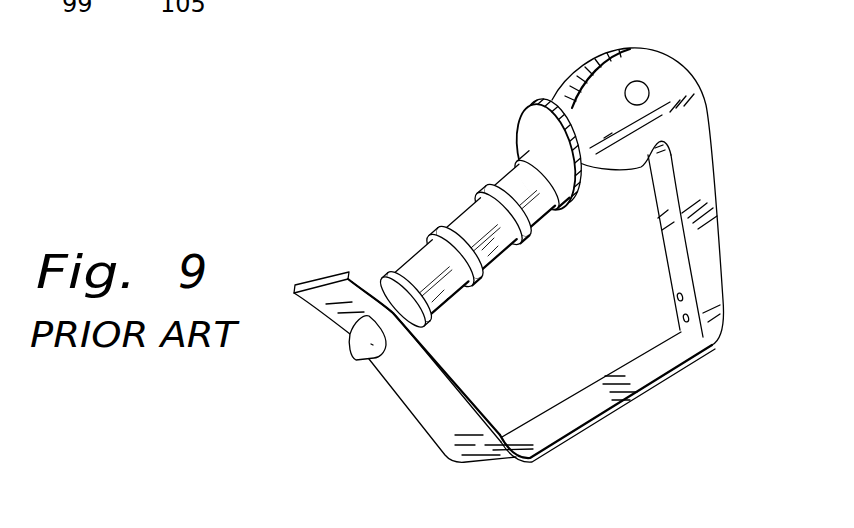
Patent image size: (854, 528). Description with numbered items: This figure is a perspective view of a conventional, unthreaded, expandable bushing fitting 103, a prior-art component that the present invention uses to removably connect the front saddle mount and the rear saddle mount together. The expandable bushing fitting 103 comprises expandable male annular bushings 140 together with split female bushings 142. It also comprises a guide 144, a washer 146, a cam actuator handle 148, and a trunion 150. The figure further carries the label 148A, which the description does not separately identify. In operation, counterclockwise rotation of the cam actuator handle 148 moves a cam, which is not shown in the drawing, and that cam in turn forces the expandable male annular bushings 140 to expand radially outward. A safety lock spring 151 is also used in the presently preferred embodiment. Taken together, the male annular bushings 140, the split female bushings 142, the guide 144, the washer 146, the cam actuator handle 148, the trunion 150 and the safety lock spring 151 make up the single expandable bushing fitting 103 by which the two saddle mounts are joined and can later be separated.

The expandable bushing fitting 103 is at (537, 259).
The expandable male annular bushings 140 is at (472, 249).
The split female bushings 142 is at (523, 317).
The guide 144 is at (352, 345).
The washer 146 is at (544, 106).
The cam actuator handle 148 is at (661, 48).
The bend of head 148A is at (603, 170).
The trunion 150 is at (647, 101).
The safety lock spring 151 is at (522, 451).